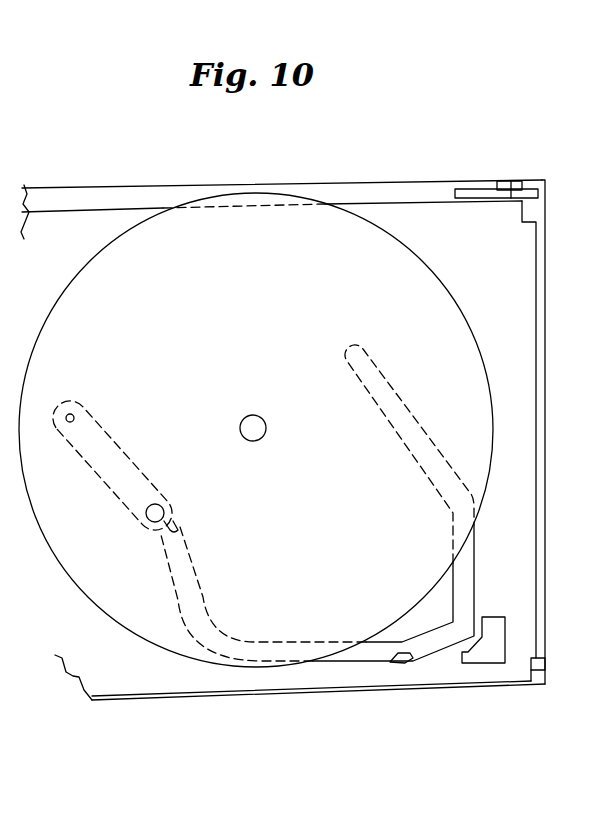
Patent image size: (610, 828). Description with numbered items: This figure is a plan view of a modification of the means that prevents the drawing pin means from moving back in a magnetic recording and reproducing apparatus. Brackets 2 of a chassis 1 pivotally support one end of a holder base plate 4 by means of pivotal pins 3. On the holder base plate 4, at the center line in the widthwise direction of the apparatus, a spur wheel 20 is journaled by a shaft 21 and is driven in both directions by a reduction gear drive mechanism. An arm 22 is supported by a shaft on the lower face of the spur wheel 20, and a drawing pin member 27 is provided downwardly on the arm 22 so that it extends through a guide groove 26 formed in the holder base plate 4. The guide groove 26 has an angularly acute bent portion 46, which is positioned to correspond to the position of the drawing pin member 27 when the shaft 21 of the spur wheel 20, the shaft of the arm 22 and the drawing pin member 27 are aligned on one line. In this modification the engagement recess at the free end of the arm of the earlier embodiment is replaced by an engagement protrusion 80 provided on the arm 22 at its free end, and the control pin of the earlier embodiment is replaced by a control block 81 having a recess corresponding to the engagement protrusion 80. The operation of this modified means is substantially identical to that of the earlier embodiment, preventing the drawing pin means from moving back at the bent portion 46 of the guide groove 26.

The chassis 1 is at (370, 188).
The bracket 2 is at (475, 192).
The pivotal pin 3 is at (512, 183).
The holder base plate 4 is at (528, 348).
The spur wheel 20 is at (400, 258).
The shaft 21 is at (260, 420).
The arm 22 is at (110, 444).
The drawing pin member 27 is at (155, 508).
The engagement protrusion 80 is at (172, 528).
The bent portion 46 is at (470, 622).
The control block 81 is at (505, 637).
The guide groove 26 is at (398, 657).